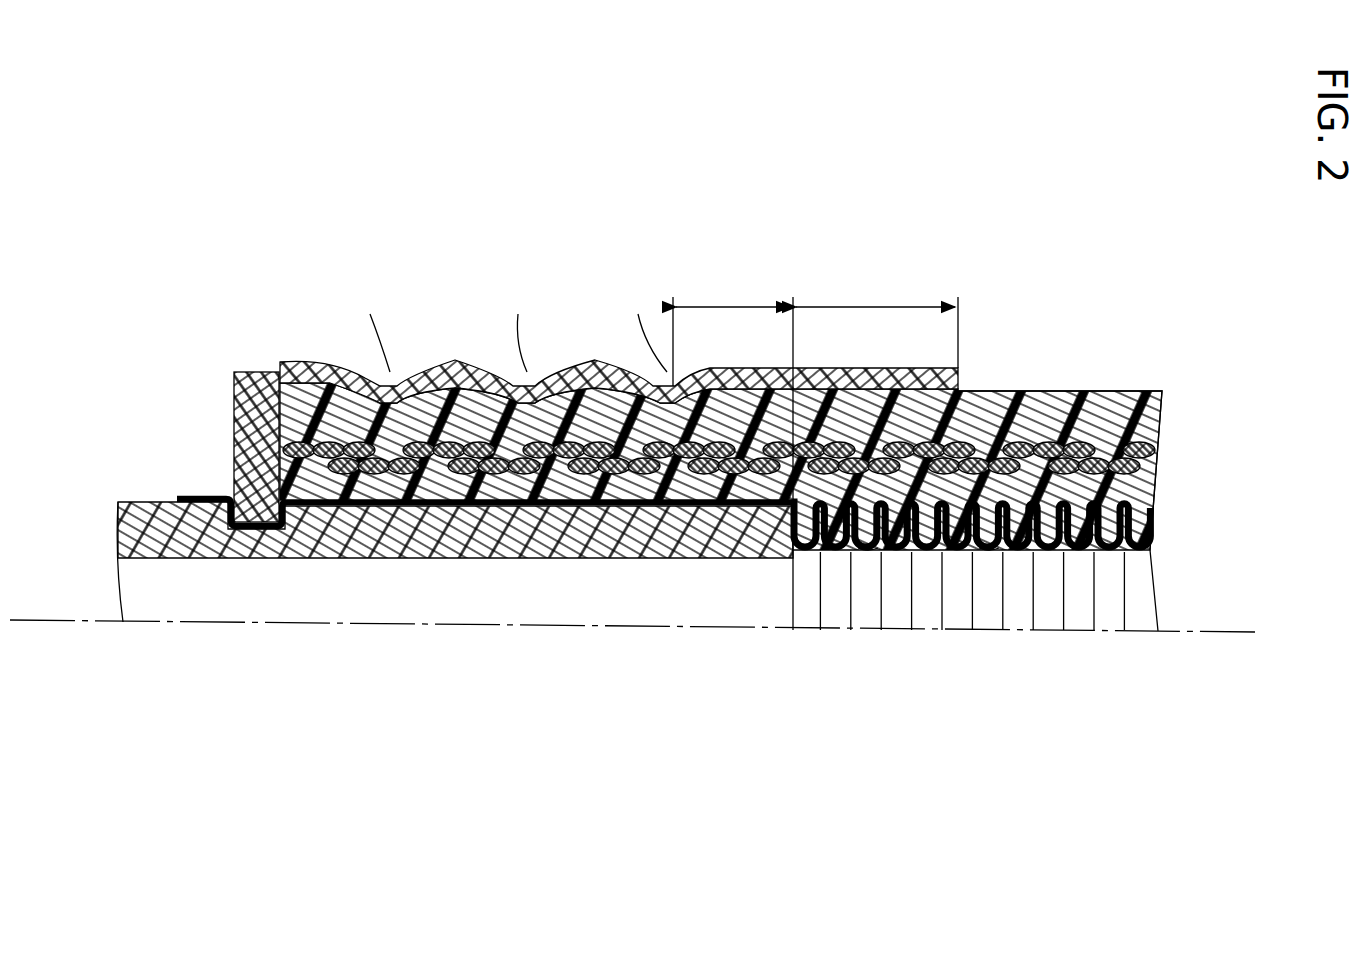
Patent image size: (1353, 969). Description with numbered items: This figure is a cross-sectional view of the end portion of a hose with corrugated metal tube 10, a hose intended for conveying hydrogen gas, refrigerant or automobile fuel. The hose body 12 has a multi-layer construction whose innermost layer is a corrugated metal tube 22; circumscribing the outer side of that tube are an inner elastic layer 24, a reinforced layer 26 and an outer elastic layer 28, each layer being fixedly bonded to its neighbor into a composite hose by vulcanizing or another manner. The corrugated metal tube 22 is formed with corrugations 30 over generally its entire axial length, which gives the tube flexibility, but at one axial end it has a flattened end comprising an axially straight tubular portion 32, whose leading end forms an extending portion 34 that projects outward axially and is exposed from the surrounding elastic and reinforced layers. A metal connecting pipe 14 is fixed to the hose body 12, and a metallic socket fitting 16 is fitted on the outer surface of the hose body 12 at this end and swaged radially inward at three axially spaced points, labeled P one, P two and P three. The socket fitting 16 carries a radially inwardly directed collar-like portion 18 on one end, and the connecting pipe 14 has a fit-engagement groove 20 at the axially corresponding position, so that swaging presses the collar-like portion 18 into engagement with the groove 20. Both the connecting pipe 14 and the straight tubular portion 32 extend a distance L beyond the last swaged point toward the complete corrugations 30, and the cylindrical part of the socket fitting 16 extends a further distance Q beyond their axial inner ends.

The hose with corrugated metal tube 10 is at (965, 248).
The hose body 12 is at (1038, 389).
The metal connecting pipe 14 is at (133, 498).
The socket fitting 16 is at (450, 360).
The collar-like portion 18 is at (238, 432).
The fit-engagement groove 20 is at (272, 528).
The corrugated metal tube 22 is at (1017, 556).
The inner elastic layer 24 is at (862, 552).
The reinforced layer 26 is at (1062, 450).
The outer elastic layer 28 is at (972, 391).
The corrugations 30 is at (985, 552).
The straight tubular portion 32 is at (512, 505).
The extending portion 34 is at (172, 502).